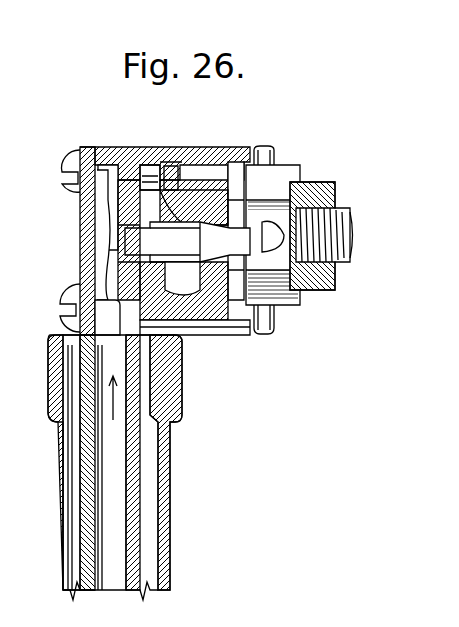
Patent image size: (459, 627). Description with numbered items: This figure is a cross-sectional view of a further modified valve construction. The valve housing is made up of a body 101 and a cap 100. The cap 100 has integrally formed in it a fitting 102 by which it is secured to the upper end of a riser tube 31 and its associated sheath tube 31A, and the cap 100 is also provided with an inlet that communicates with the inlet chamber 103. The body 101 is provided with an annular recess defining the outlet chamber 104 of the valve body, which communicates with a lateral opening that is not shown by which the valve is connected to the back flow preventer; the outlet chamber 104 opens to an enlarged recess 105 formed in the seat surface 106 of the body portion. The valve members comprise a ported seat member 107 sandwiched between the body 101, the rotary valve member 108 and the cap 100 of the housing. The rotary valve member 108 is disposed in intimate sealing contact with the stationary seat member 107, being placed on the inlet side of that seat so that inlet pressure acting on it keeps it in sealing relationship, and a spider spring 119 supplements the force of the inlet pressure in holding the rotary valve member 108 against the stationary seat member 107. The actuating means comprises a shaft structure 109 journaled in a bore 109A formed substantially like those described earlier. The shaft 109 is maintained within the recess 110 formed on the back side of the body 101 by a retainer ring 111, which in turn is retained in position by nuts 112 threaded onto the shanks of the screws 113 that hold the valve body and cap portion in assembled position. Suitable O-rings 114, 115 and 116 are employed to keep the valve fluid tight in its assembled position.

The cap 100 is at (118, 150).
The body 101 is at (203, 170).
The inlet chamber 103 is at (108, 175).
The enlarged recess 105 is at (176, 160).
The seat surface 106 is at (148, 165).
The recess 110 is at (233, 160).
The retainer ring 111 is at (258, 148).
The nuts 112 is at (270, 322).
The shaft structure 109 is at (272, 205).
The bore 109A is at (292, 215).
The O-ring 115 is at (168, 205).
The outlet chamber 104 is at (224, 330).
The spider spring 119 is at (96, 218).
The rotary valve member 108 is at (118, 268).
The ported seat member 107 is at (160, 285).
The screws 113 is at (66, 298).
The O-ring 114 is at (188, 330).
The fitting 102 is at (138, 467).
The O-ring 116 is at (176, 370).
The sheath tube 31A is at (170, 458).
The riser tube 31 is at (140, 508).